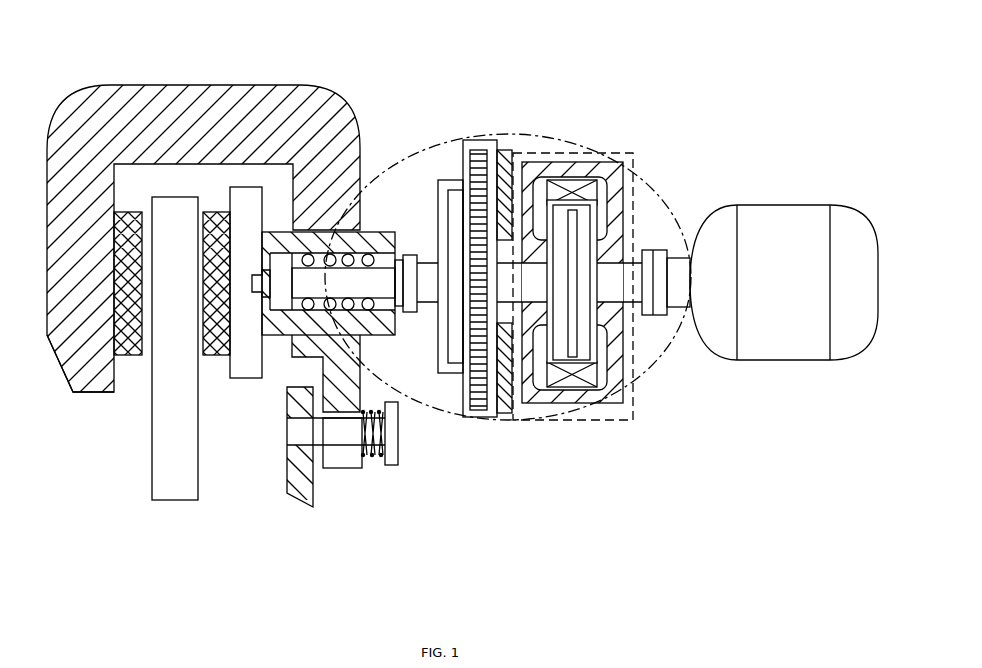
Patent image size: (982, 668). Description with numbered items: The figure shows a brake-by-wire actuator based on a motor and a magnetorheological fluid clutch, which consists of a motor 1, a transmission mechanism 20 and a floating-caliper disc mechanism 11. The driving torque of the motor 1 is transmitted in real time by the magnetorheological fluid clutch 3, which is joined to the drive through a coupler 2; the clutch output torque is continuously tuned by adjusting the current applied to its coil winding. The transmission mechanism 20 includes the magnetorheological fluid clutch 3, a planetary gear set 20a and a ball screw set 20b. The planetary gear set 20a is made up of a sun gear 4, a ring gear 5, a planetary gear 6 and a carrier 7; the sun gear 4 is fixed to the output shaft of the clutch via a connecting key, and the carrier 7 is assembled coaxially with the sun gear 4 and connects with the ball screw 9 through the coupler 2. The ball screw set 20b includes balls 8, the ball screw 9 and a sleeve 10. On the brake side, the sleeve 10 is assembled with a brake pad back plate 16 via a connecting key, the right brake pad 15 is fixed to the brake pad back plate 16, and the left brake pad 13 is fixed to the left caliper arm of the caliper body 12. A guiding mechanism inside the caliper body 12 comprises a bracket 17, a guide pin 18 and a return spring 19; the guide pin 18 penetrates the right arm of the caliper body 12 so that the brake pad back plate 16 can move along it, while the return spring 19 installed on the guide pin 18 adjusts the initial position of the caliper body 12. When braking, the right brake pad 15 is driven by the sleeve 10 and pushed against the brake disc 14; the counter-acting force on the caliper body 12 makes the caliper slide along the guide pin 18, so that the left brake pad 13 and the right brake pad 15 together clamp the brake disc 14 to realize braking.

The motor 1 is at (712, 250).
The coupler 2 is at (666, 225).
The magnetorheological fluid clutch 3 is at (618, 137).
The sun gear 4 is at (520, 157).
The ring gear 5 is at (496, 152).
The planetary gear 6 is at (470, 150).
The carrier 7 is at (447, 235).
The ball 8 is at (370, 250).
The ball screw 9 is at (327, 287).
The sleeve 10 is at (268, 288).
The floating-caliper disc mechanism 11 is at (137, 82).
The caliper body 12 is at (92, 363).
The left brake pad 13 is at (130, 357).
The brake disc 14 is at (178, 452).
The right brake pad 15 is at (212, 358).
The brake pad back plate 16 is at (249, 353).
The bracket 17 is at (290, 398).
The guide pin 18 is at (347, 435).
The return spring 19 is at (383, 457).
The transmission mechanism 20 is at (562, 435).
The planetary gear set 20a is at (498, 435).
The ball screw set 20b is at (403, 358).